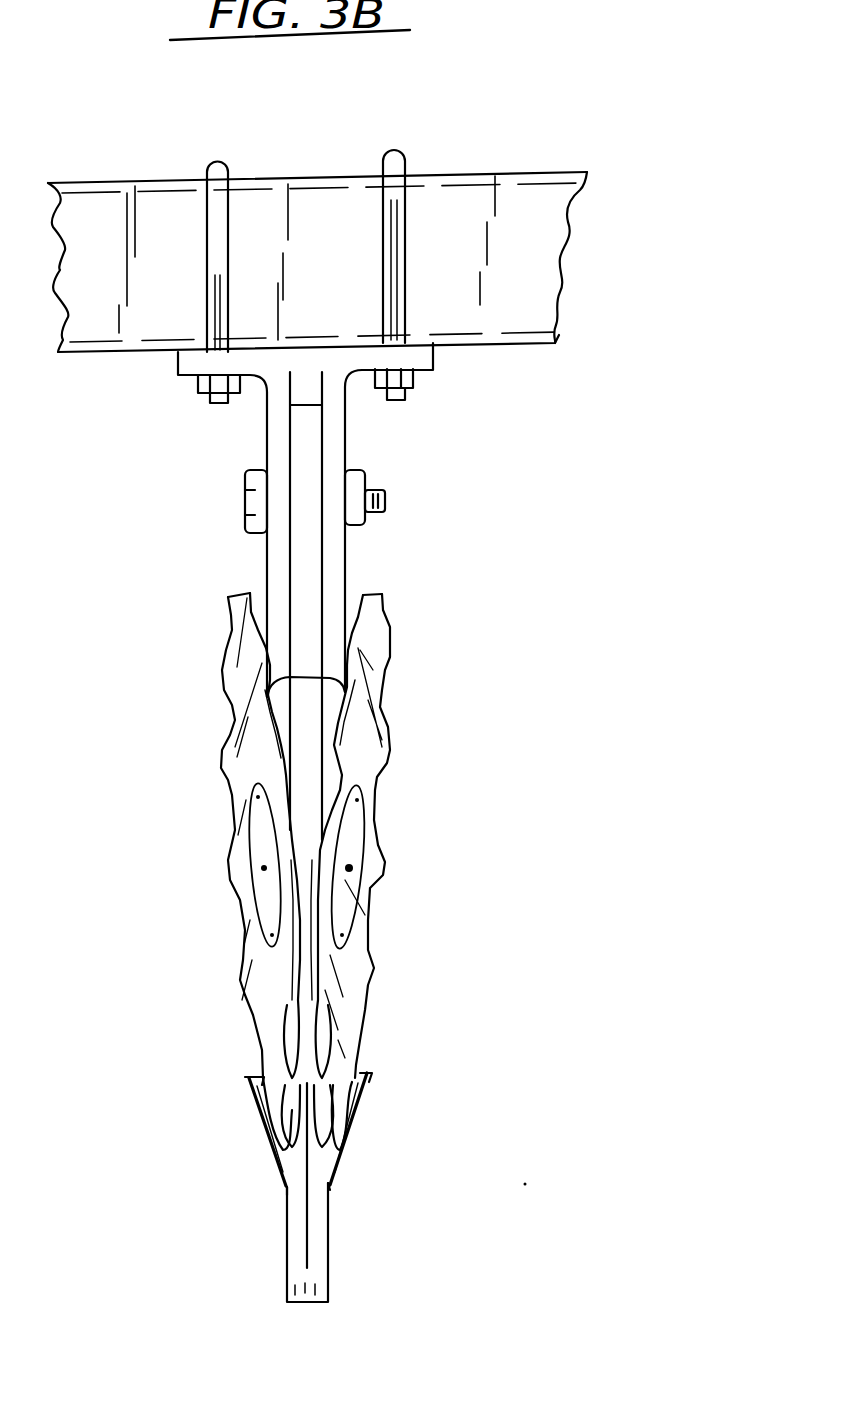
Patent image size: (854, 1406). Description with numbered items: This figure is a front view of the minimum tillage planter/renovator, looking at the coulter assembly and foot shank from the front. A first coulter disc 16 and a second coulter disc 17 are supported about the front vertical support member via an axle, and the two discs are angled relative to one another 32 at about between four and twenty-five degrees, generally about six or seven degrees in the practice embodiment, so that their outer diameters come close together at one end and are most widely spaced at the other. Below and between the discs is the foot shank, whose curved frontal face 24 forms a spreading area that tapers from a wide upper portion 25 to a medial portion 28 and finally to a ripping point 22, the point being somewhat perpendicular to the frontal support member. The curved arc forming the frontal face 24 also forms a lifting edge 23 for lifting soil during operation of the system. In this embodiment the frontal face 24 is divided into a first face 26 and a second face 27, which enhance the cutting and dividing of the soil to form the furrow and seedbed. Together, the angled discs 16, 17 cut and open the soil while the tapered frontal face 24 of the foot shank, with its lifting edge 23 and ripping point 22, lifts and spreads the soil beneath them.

The first coulter disc 16 is at (232, 752).
The second coulter disc 17 is at (383, 760).
The ripping point 22 is at (328, 1302).
The lifting edge 23 is at (307, 1235).
The frontal face 24 is at (358, 1192).
The wide upper portion 25 is at (362, 1083).
The first face 26 is at (270, 1158).
The second face 27 is at (330, 1185).
The medial portion 28 is at (285, 1185).
The angle between first and second discs 32 is at (310, 672).